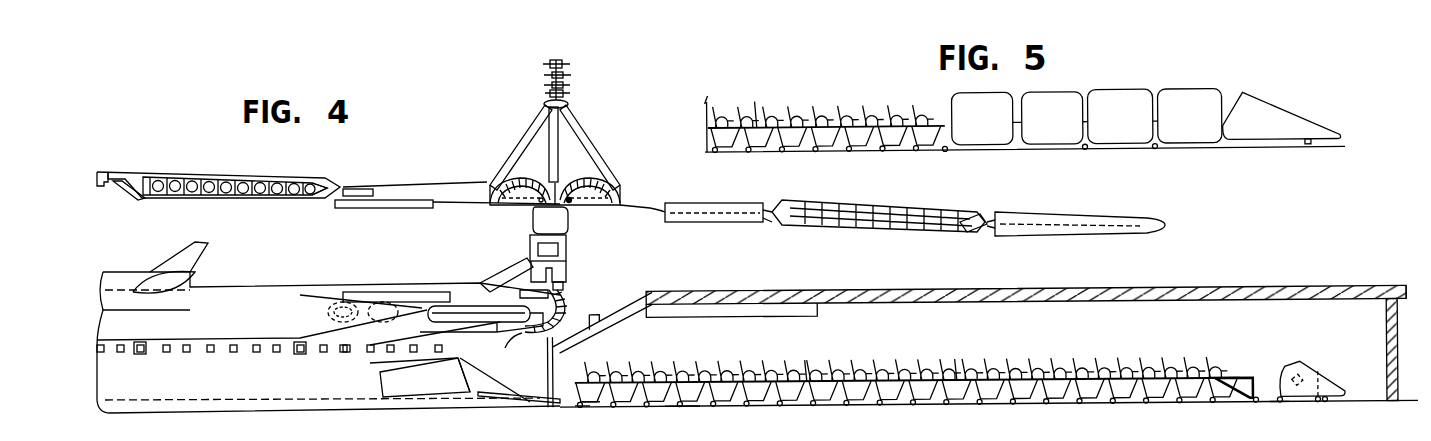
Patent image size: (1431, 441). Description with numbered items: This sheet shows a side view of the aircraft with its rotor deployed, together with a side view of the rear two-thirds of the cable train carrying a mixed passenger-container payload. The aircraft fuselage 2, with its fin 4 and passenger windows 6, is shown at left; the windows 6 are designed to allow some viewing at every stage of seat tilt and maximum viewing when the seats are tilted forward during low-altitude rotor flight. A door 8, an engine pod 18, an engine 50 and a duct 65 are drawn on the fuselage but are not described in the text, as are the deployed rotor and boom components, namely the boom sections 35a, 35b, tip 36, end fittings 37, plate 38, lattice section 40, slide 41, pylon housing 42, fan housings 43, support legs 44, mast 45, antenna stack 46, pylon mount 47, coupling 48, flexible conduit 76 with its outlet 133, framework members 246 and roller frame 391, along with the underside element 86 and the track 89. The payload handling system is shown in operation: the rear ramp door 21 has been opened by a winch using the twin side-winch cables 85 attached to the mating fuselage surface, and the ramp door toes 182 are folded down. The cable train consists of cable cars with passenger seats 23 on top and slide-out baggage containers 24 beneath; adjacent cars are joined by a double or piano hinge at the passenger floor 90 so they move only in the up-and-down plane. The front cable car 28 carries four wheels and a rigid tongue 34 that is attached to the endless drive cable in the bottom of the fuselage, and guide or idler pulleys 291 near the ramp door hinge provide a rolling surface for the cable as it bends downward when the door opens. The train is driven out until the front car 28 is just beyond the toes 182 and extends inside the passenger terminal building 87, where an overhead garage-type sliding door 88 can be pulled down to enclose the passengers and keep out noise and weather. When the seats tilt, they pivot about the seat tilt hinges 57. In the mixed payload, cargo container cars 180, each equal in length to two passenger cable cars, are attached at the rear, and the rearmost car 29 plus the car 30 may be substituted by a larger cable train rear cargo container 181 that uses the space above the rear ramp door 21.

In FIG. 4, the aircraft fuselage 2 is at (128, 272).
In FIG. 4, the vertical fin 4 is at (208, 256).
In FIG. 4, the passenger windows 6 is at (345, 355).
In FIG. 4, the door 8 is at (298, 356).
In FIG. 4, the engine pod 18 is at (474, 310).
In FIG. 4, the rear ramp door 21 is at (446, 422).
In FIG. 4, the passenger seats 23 is at (907, 367).
In FIG. 5, the passenger seats 23 is at (826, 108).
In FIG. 4, the slide-out baggage containers 24 is at (897, 416).
In FIG. 4, the front cable car 28 is at (614, 417).
In FIG. 4, the rearmost car 29 is at (1311, 369).
In FIG. 4, the car 30 is at (1244, 365).
In FIG. 4, the rigid tongue 34 is at (543, 392).
In FIG. 4, the left boom section 35a is at (128, 170).
In FIG. 4, the right boom section 35b is at (1125, 209).
In FIG. 4, the boom tip 36 is at (285, 182).
In FIG. 4, the boom end bumper 37 is at (100, 190).
In FIG. 4, the boom mounting plate 38 is at (390, 214).
In FIG. 4, the boom lattice section 40 is at (900, 210).
In FIG. 4, the boom slide 41 is at (365, 188).
In FIG. 4, the pylon housing 42 is at (568, 252).
In FIG. 4, the fan housing 43 is at (568, 190).
In FIG. 4, the support leg 44 is at (500, 152).
In FIG. 4, the central mast 45 is at (548, 168).
In FIG. 4, the antenna stack 46 is at (542, 91).
In FIG. 4, the pylon mount 47 is at (501, 274).
In FIG. 4, the pivot coupling 48 is at (526, 295).
In FIG. 4, the engine 50 is at (328, 314).
In FIG. 4, the seat tilt hinge 57 is at (905, 356).
In FIG. 5, the seat tilt hinge 57 is at (808, 98).
In FIG. 4, the upper duct 65 is at (392, 290).
In FIG. 4, the flexible conduit 76 is at (567, 304).
In FIG. 4, the twin side-winch cables 85 is at (470, 405).
In FIG. 4, the fuselage underside 86 is at (290, 410).
In FIG. 4, the passenger terminal building 87 is at (1290, 308).
In FIG. 4, the overhead garage-type sliding door 88 is at (616, 330).
In FIG. 4, the track 89 is at (689, 419).
In FIG. 5, the track 89 is at (1025, 134).
In FIG. 4, the passenger floor 90 is at (872, 381).
In FIG. 5, the passenger floor 90 is at (896, 96).
In FIG. 4, the conduit outlet 133 is at (512, 346).
In FIG. 5, the cargo container cars 180 is at (1082, 105).
In FIG. 5, the cable train rear cargo container 181 is at (1281, 106).
In FIG. 4, the ramp door toes 182 is at (583, 419).
In FIG. 4, the boom framework 246 is at (214, 174).
In FIG. 4, the guide or idler pulleys 291 is at (1276, 413).
In FIG. 4, the roller frame 391 is at (138, 200).